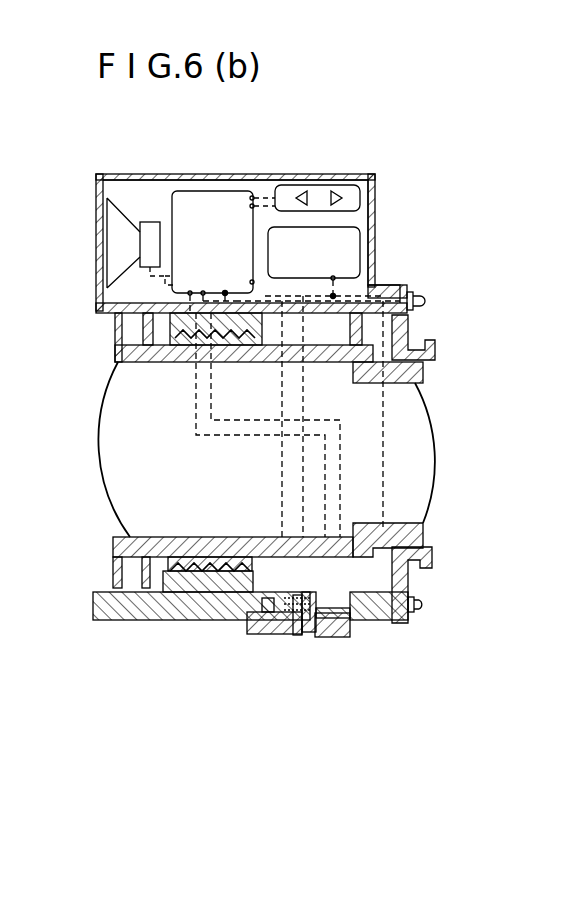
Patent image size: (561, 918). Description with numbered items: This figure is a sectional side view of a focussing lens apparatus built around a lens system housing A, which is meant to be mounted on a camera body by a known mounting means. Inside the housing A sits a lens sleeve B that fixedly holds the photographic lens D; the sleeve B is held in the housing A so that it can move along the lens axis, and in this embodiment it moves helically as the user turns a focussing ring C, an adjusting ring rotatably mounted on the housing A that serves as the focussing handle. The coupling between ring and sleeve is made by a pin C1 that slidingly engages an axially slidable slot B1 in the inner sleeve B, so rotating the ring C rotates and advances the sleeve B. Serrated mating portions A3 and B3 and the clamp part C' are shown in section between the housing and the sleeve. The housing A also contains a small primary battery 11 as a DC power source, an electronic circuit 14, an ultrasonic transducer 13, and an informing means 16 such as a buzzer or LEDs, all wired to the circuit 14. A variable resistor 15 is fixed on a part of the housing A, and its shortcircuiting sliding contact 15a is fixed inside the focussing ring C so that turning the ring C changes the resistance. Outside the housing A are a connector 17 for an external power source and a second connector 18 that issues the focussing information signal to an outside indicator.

The lens system housing A is at (103, 178).
The serrated teeth of cabinet A3 is at (215, 578).
The lens sleeve B is at (117, 346).
The axially slidable slot B1 is at (360, 545).
The serrated teeth of flange B3 is at (150, 566).
The focussing ring C is at (326, 636).
The clamp member C' is at (274, 639).
The pin C1 is at (392, 579).
The photographic lens D is at (120, 486).
The small primary battery 11 is at (352, 243).
The ultrasonic transducer 13 is at (125, 228).
The electronic circuit 14 is at (233, 200).
The variable resistor 15 is at (350, 630).
The sliding contact 15a is at (326, 640).
The informing means 16 is at (335, 196).
The connector 17 is at (420, 301).
The connector 18 is at (420, 606).